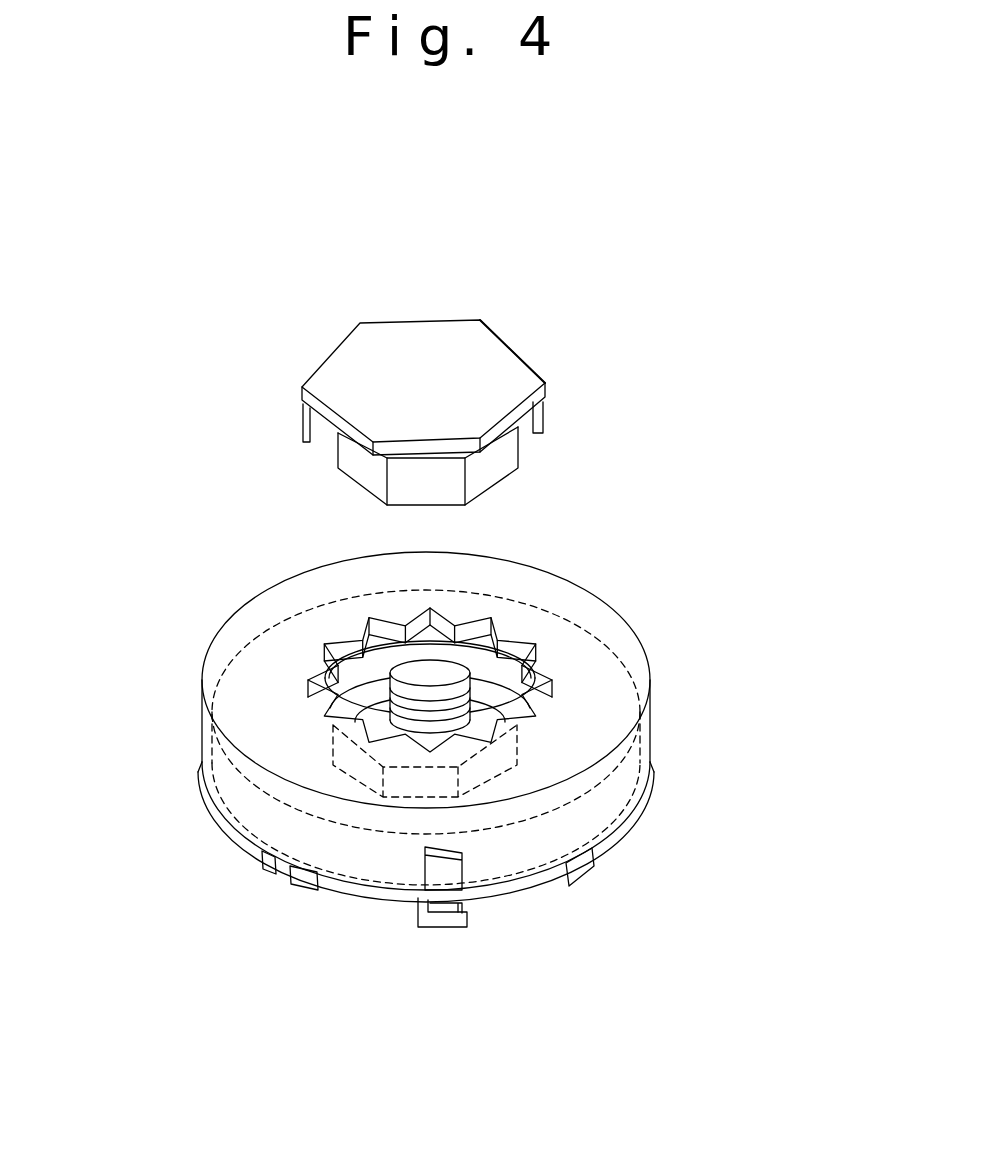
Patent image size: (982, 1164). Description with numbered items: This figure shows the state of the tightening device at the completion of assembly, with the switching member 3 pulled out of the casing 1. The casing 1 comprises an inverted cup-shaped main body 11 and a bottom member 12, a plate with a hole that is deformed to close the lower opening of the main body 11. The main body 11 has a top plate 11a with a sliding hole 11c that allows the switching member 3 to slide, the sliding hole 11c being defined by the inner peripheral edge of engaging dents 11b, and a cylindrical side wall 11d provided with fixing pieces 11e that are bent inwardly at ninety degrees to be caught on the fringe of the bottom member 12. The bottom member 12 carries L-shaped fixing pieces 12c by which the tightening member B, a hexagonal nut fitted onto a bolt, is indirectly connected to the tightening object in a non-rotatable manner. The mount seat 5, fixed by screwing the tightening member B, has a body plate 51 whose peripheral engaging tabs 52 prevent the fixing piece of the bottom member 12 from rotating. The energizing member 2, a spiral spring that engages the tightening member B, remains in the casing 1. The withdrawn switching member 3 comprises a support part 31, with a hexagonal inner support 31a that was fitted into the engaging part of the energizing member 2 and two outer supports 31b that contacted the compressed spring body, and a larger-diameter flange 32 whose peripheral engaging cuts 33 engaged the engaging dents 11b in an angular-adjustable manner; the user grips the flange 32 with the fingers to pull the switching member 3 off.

The casing 1 is at (622, 578).
The energizing member 2 is at (365, 658).
The switching member 3 is at (456, 306).
The mount seat 5 is at (311, 910).
The main body 11 is at (662, 641).
The top plate 11a is at (220, 650).
The engaging dents 11b is at (472, 623).
The sliding hole 11c is at (500, 671).
The cylindrical side wall 11d is at (645, 768).
The fixing pieces 11e is at (262, 872).
The bottom member 12 is at (630, 852).
The L-shaped fixing pieces 12c is at (437, 930).
The support part 31 is at (340, 478).
The inner support 31a is at (493, 462).
The outer supports 31b is at (302, 428).
The flange 32 is at (460, 363).
The engaging cuts 33 is at (522, 357).
The body plate 51 is at (283, 888).
The engaging tabs 52 is at (463, 913).
The tightening member B is at (380, 713).